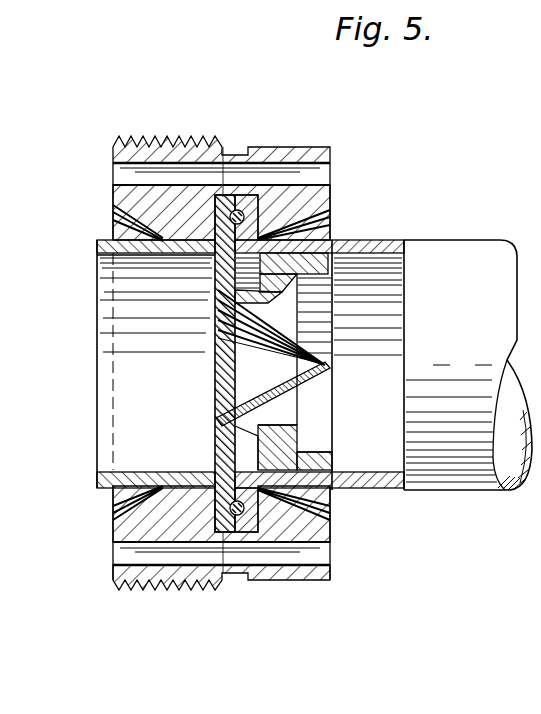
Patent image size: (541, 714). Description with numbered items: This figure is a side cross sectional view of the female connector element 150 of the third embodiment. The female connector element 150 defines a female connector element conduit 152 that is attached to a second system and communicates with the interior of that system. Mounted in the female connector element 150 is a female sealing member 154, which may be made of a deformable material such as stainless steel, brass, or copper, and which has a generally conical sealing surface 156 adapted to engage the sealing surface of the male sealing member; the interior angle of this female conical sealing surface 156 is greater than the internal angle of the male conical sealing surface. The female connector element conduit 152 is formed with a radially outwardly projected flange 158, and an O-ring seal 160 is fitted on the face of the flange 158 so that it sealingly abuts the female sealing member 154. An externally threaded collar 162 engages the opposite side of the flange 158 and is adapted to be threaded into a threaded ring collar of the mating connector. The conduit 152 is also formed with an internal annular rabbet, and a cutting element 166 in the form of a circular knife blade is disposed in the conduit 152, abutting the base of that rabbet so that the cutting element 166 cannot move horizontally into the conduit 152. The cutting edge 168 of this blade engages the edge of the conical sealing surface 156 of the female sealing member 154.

The female connector element 150 is at (386, 140).
The female connector element conduit 152 is at (368, 484).
The female sealing member 154 is at (215, 443).
The conical sealing surface 156 is at (261, 302).
The flange 158 is at (249, 518).
The O-ring seal 160 is at (239, 212).
The externally threaded collar 162 is at (167, 148).
The cutting element 166 is at (333, 297).
The cutting edge 168 is at (245, 322).